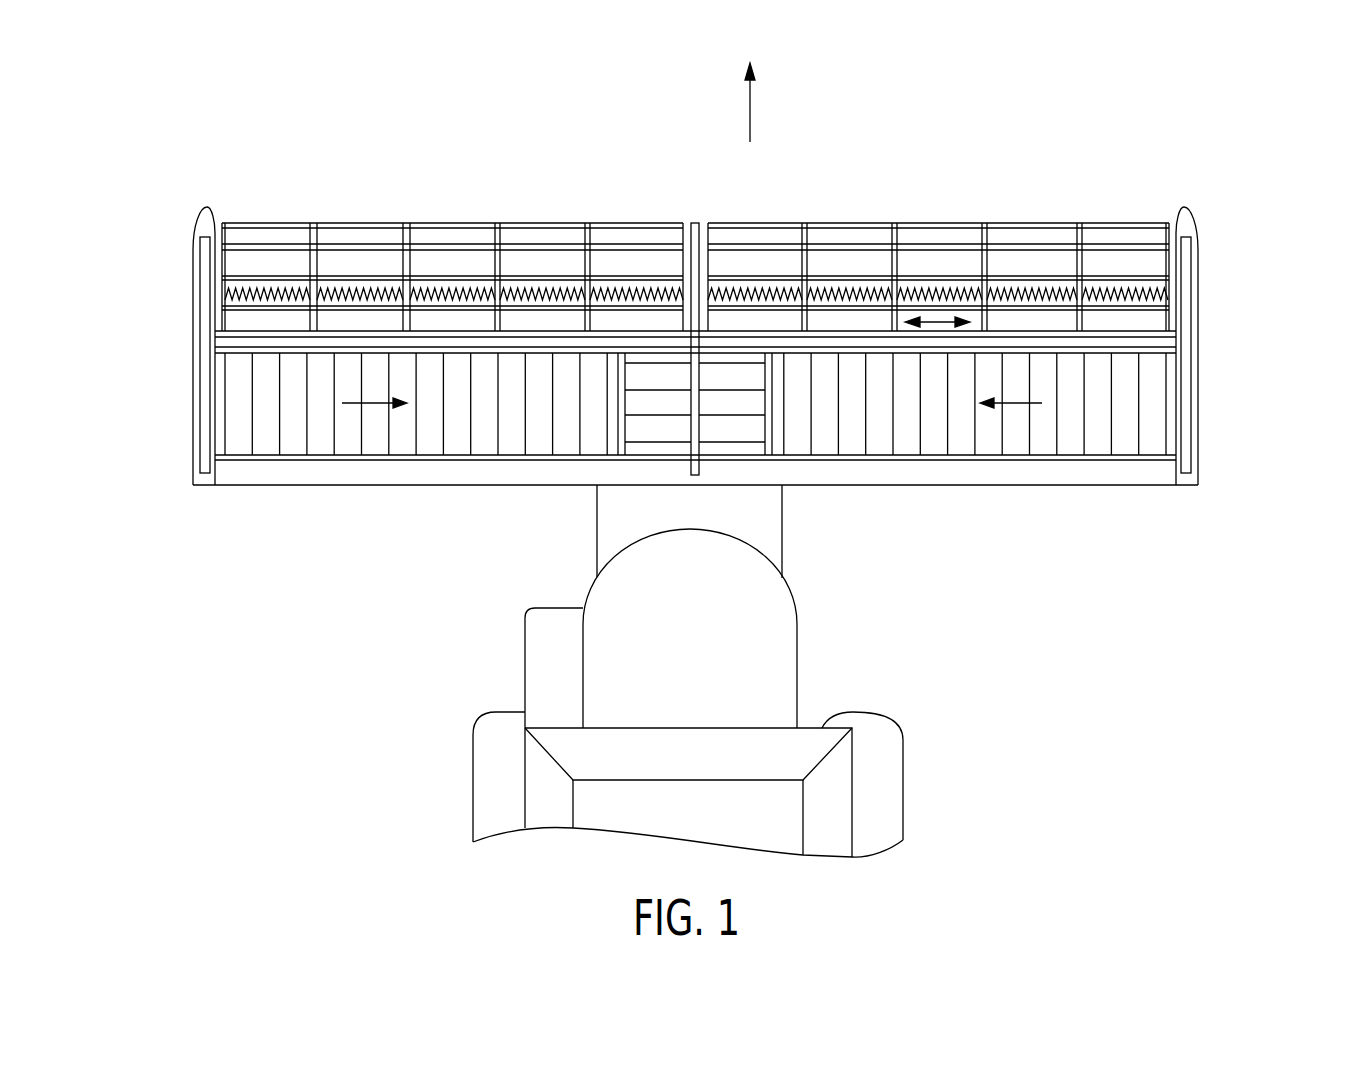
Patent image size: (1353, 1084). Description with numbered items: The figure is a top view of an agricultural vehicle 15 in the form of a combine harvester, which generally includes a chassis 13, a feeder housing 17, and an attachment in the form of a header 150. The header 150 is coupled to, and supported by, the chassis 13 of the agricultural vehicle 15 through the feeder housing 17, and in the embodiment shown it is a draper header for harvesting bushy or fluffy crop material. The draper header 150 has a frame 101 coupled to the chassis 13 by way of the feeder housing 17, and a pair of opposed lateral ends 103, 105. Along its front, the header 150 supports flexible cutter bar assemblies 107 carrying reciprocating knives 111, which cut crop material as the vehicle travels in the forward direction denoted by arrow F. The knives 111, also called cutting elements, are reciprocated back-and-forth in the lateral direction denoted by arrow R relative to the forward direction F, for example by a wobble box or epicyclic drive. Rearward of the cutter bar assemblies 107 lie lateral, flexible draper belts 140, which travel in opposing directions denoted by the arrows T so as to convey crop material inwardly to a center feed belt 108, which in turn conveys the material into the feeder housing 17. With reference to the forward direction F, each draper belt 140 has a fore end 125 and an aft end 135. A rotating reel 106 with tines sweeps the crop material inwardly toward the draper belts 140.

The frame 101 is at (485, 487).
The lateral end 103 is at (176, 405).
The lateral end 105 is at (1224, 405).
The rotating reel 106 is at (1027, 222).
The flexible cutter bar assembly 107 is at (355, 284).
The center feed belt 108 is at (662, 388).
The reciprocating knives 111 is at (440, 294).
The fore end 125 is at (1122, 366).
The aft end 135 is at (430, 458).
The draper belt 140 is at (250, 422).
The header 150 is at (1224, 488).
The chassis 13 is at (797, 648).
The agricultural vehicle 15 is at (853, 802).
The feeder housing 17 is at (777, 518).
The forward direction F is at (750, 118).
The lateral direction R is at (938, 318).
The direction of travel T is at (378, 405).